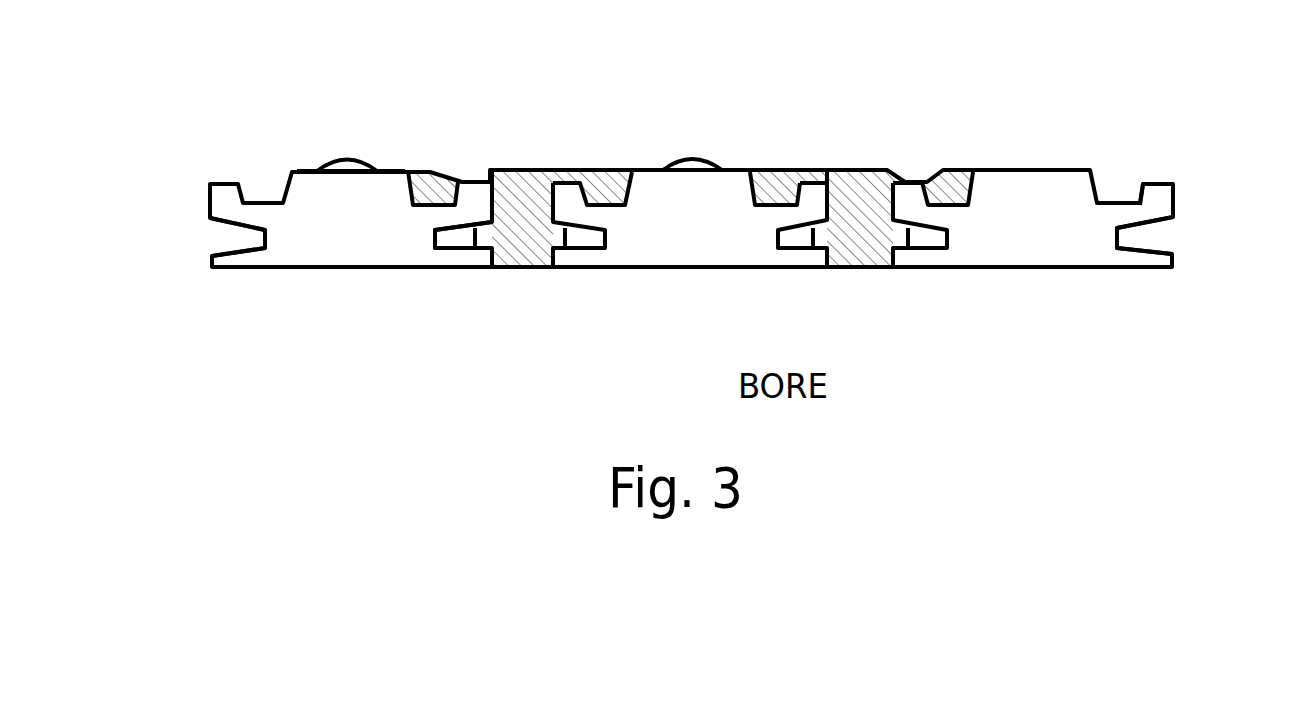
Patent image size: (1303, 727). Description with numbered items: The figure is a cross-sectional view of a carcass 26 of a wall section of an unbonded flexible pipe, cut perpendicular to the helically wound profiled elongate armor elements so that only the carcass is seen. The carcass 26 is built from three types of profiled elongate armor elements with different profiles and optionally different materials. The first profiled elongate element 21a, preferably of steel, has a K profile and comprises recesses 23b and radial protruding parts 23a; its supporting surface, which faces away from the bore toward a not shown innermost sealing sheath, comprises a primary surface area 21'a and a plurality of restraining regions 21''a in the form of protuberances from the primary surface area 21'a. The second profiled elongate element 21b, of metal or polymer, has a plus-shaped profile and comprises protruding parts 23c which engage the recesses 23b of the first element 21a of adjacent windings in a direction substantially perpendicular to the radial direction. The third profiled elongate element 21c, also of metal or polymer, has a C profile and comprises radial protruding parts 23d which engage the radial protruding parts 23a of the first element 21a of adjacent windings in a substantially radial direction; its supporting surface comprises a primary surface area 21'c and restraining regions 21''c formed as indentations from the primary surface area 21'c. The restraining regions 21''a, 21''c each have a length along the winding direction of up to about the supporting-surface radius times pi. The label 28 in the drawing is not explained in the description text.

The first profiled elongate element 21a is at (387, 195).
The restraining regions 21''a is at (354, 102).
The primary surface area 21'a is at (681, 107).
The second profiled elongate element 21b is at (521, 208).
The third profiled elongate element 21c is at (843, 158).
The primary surface area 21'c is at (442, 123).
The restraining regions 21''c is at (949, 133).
The radial protruding parts 23a is at (1168, 179).
The recesses 23b is at (219, 237).
The protruding parts 23c is at (482, 244).
The radial protruding parts 23d is at (774, 162).
The carcass 26 is at (1090, 100).
The contact surfaces 28 is at (552, 284).